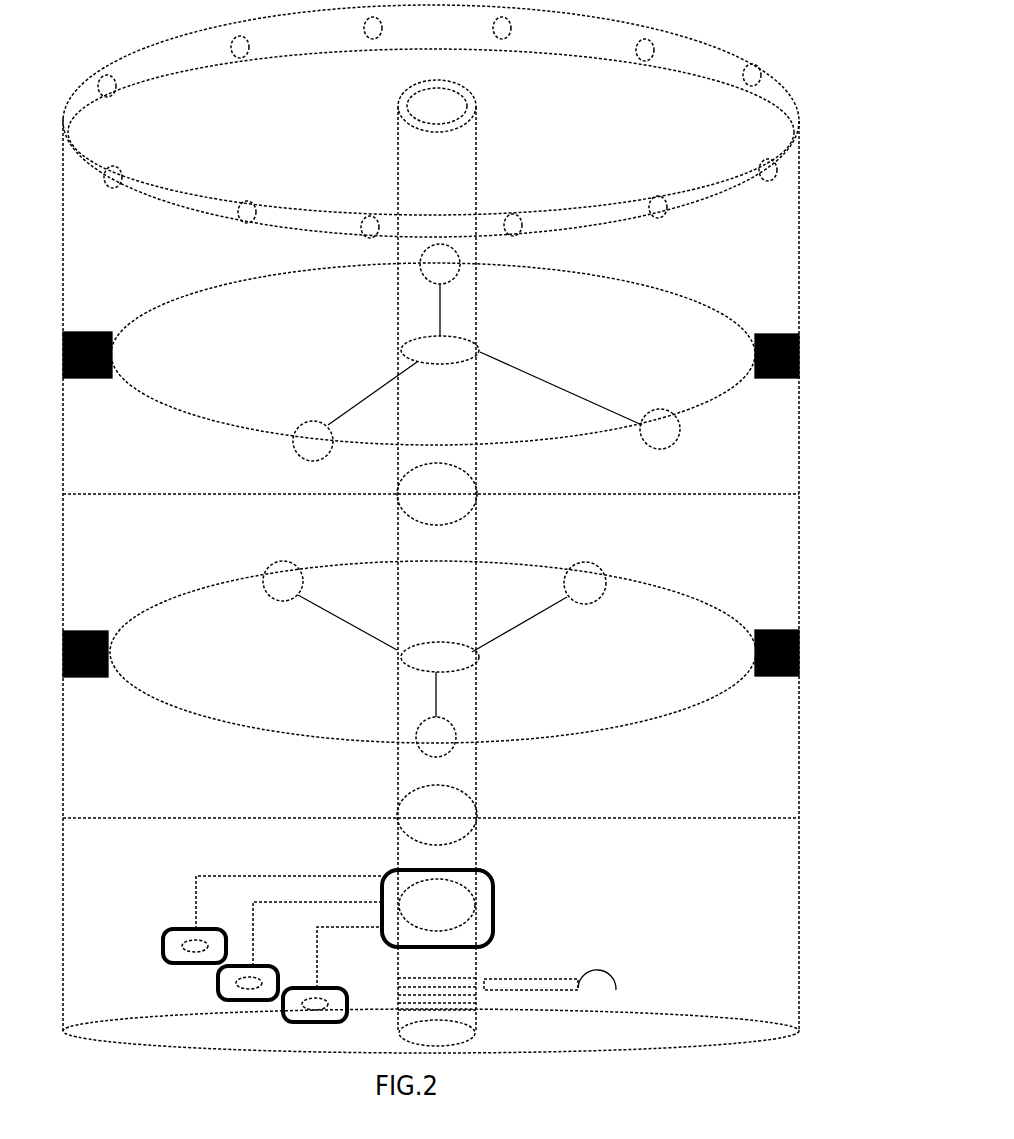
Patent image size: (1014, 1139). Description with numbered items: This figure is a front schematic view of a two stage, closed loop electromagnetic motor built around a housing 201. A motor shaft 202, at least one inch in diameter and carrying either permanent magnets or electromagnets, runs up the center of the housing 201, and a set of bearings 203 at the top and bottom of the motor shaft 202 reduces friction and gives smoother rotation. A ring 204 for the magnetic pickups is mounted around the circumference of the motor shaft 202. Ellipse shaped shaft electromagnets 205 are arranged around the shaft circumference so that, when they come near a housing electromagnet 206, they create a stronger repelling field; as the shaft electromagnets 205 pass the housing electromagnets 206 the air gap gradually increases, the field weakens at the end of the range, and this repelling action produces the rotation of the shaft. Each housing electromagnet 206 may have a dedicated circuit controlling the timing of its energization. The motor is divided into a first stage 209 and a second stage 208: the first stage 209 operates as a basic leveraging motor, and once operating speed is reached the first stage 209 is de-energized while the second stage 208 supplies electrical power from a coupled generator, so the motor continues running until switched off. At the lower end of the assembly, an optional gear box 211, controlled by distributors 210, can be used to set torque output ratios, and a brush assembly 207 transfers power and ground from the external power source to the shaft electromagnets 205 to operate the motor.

The housing 201 is at (799, 212).
The motor shaft 202 is at (478, 152).
The bearings 203 is at (478, 96).
The ring for the magnetic pickups 204 is at (668, 722).
The shaft electromagnets 205 is at (598, 567).
The housing electromagnet 206 is at (63, 648).
The brush assembly 207 is at (618, 988).
The Stage 2 208 is at (426, 349).
The Stage 1 209 is at (337, 646).
The distributors 210 is at (216, 987).
The gear box 211 is at (497, 908).